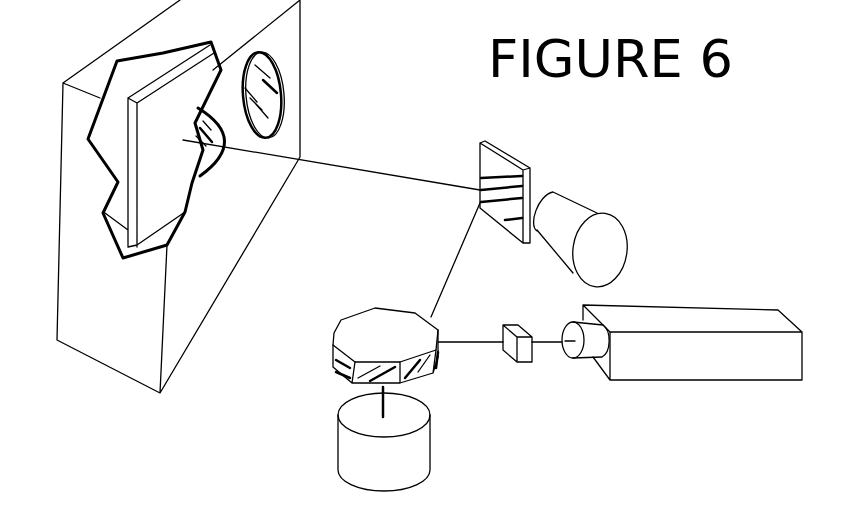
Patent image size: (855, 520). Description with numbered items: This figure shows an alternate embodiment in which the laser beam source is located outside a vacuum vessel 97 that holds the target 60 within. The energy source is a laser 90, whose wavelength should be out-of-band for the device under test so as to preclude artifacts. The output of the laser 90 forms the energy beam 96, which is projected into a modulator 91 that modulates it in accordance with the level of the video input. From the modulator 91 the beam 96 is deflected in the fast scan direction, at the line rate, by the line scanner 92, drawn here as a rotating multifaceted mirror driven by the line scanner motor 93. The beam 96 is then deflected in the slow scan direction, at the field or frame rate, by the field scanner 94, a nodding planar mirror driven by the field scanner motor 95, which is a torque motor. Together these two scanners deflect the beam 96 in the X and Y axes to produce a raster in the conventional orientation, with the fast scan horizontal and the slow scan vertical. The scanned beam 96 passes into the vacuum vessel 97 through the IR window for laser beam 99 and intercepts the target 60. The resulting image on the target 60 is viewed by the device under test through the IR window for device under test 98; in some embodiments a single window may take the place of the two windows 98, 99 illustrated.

The target 60 is at (150, 135).
The laser 90 is at (668, 380).
The modulator 91 is at (523, 362).
The line scanner 92 is at (334, 335).
The line scanner motor 93 is at (428, 448).
The field scanner 94 is at (555, 162).
The field scanner motor 95 is at (627, 248).
The energy beam 96 is at (453, 282).
The vacuum vessel 97 is at (300, 103).
The IR window for device under test 98 is at (273, 58).
The IR window for laser beam 99 is at (220, 177).